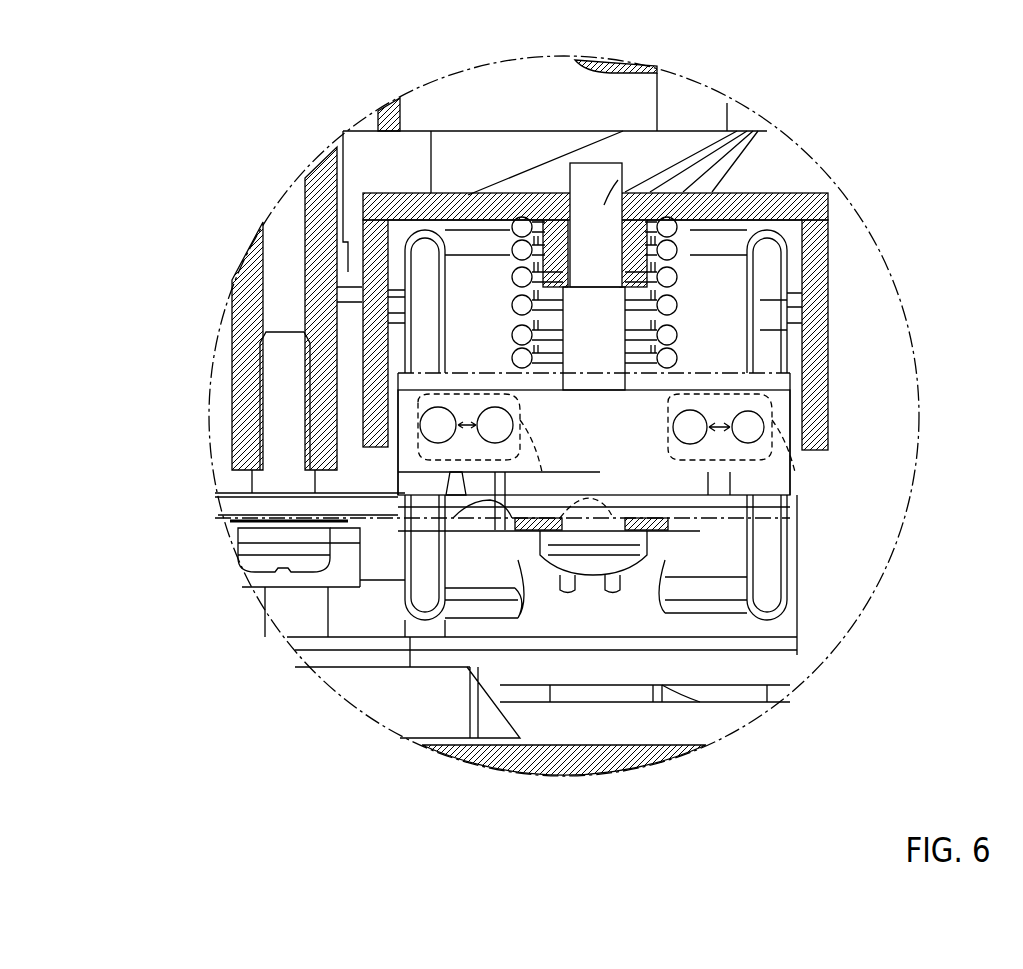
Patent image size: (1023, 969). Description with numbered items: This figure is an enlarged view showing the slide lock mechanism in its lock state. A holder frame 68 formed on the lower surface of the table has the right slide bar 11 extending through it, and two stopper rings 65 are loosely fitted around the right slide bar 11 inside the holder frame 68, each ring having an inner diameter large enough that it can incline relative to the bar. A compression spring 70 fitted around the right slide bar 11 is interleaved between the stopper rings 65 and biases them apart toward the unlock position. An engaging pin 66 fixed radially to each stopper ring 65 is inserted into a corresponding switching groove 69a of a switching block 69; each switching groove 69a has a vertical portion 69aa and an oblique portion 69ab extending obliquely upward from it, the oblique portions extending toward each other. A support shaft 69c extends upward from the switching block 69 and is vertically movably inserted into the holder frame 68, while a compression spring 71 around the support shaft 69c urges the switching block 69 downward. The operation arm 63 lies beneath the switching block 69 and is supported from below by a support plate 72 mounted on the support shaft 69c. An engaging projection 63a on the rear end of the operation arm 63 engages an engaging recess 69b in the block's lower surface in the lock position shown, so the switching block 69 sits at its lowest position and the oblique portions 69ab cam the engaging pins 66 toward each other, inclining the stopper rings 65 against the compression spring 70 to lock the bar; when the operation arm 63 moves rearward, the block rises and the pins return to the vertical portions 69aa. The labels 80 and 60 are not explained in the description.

The right slide bar 11 is at (783, 335).
The operation arm 63 is at (378, 510).
The engaging projection 63a is at (440, 463).
The stopper ring 65 is at (470, 257).
The engaging pin 66 is at (400, 420).
The holder frame 68 is at (515, 197).
The switching block 69 is at (405, 340).
The switching groove 69a is at (395, 468).
The vertical portion 69aa is at (398, 560).
The oblique portion 69ab is at (400, 385).
The engaging recess 69b is at (485, 480).
The support shaft 69c is at (604, 205).
The compression spring 70 is at (650, 457).
The compression spring 71 is at (783, 262).
The support plate 72 is at (518, 605).
The lower assembly 80 is at (385, 632).
The base unit 60 is at (495, 732).